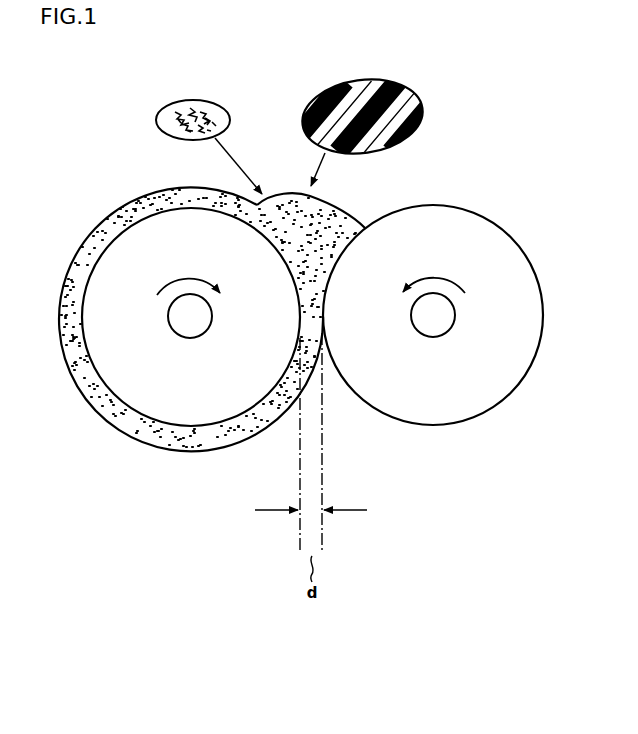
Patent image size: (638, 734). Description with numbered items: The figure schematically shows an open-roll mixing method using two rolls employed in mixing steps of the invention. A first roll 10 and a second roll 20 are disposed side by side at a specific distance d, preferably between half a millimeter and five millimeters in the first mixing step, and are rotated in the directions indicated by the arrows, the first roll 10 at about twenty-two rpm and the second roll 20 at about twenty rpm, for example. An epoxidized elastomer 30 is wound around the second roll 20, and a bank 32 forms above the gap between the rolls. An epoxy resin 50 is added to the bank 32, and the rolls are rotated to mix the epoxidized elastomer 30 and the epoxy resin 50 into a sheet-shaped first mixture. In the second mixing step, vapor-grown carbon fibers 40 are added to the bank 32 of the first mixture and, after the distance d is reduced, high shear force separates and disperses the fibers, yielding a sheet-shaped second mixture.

The first roll 10 is at (488, 368).
The second roll 20 is at (137, 370).
The epoxidized elastomer 30 is at (145, 203).
The bank 32 is at (322, 217).
The vapor-grown carbon fibers 40 is at (197, 103).
The epoxy resin 50 is at (305, 103).